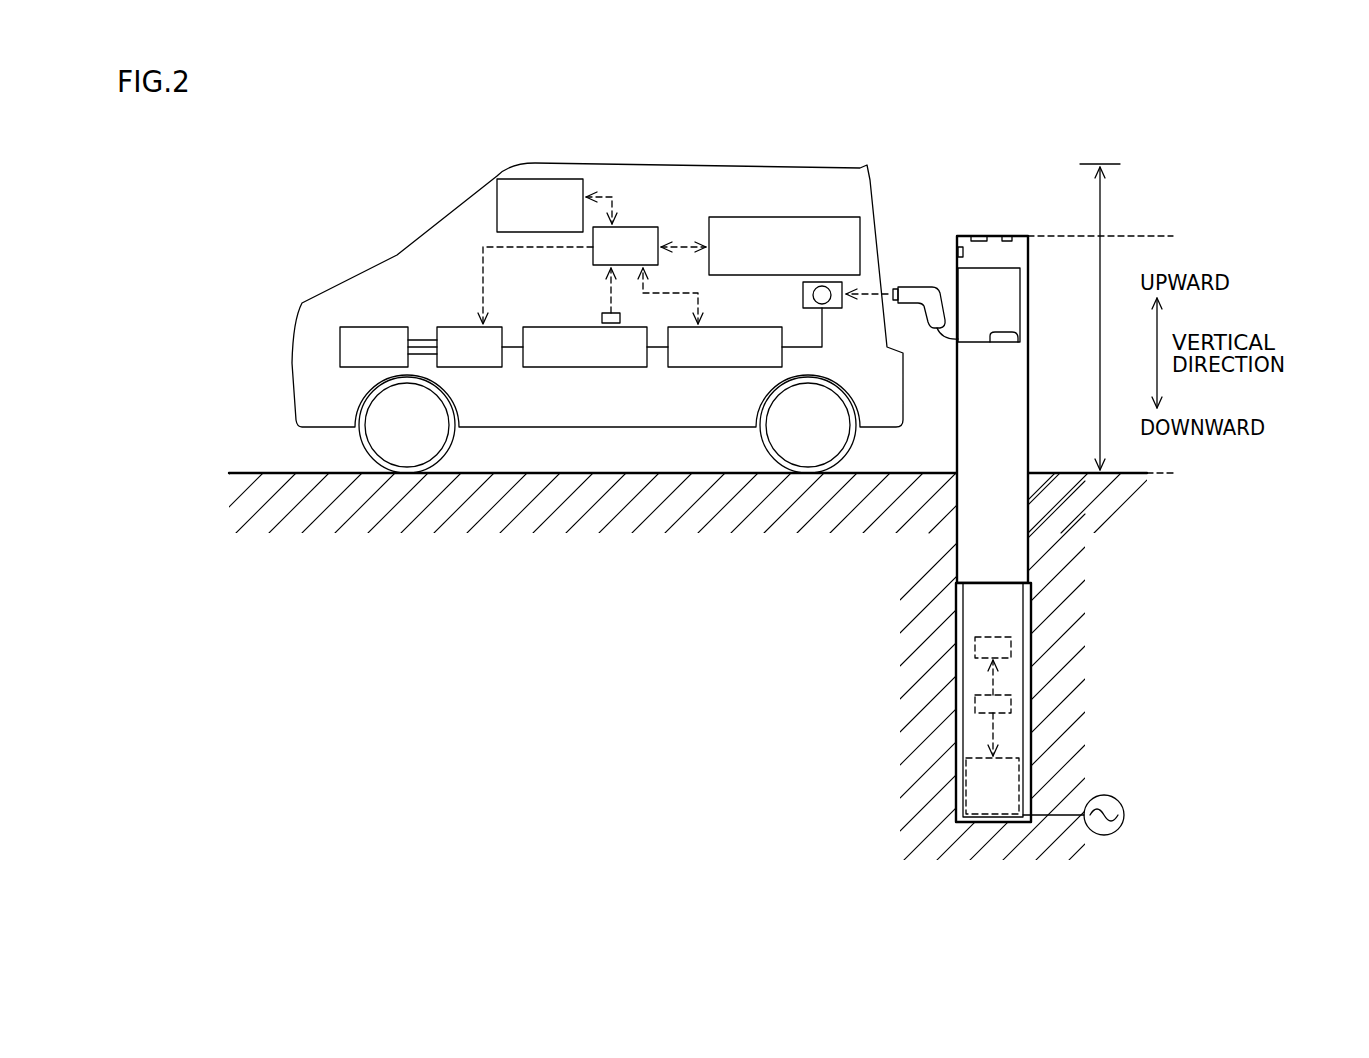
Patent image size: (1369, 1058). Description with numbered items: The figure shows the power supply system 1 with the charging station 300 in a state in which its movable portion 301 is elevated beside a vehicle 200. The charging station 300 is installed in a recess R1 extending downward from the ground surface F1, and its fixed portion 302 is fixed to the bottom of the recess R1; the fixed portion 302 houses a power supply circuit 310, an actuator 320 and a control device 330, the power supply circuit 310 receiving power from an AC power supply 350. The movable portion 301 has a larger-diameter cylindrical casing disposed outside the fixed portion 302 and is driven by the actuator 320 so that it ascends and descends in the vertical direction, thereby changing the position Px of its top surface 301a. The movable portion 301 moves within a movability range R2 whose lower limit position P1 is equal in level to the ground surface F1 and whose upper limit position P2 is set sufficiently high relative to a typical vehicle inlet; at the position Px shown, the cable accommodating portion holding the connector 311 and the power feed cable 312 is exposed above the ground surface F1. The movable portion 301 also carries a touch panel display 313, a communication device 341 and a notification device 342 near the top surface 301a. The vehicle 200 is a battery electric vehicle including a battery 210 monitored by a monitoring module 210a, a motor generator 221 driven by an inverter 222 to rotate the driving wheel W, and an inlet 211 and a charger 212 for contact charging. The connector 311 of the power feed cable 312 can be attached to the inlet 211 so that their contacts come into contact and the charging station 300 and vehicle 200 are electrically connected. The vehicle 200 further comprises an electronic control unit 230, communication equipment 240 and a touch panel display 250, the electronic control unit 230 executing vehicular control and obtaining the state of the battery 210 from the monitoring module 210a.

The power supply system 1 is at (278, 163).
The vehicle 200 is at (750, 172).
The battery 210 is at (545, 368).
The monitoring module 210a is at (602, 318).
The inlet 211 is at (836, 308).
The charger 212 is at (728, 327).
The motor generator 221 is at (372, 327).
The inverter 222 is at (445, 327).
The electronic control unit 230 is at (640, 227).
The communication equipment 240 is at (800, 217).
The touch panel display 250 is at (498, 204).
The driving wheel W is at (360, 433).
The ground surface F1 is at (890, 468).
The charging station 300 is at (1008, 529).
The movable portion 301 is at (1034, 451).
The top surface 301a is at (1028, 236).
The fixed portion 302 is at (1027, 630).
The power supply circuit 310 is at (990, 822).
The connector 311 is at (910, 287).
The power feed cable 312 is at (995, 344).
The touch panel display 313 is at (957, 250).
The actuator 320 is at (965, 647).
The control device 330 is at (960, 707).
The communication device 341 is at (1007, 236).
The notification device 342 is at (979, 236).
The AC power supply 350 is at (1125, 818).
The recess R1 is at (956, 624).
The movability range R2 is at (1117, 318).
The lower limit position P1 is at (1175, 473).
The upper limit position P2 is at (1116, 164).
The position of top surface Px is at (1116, 236).